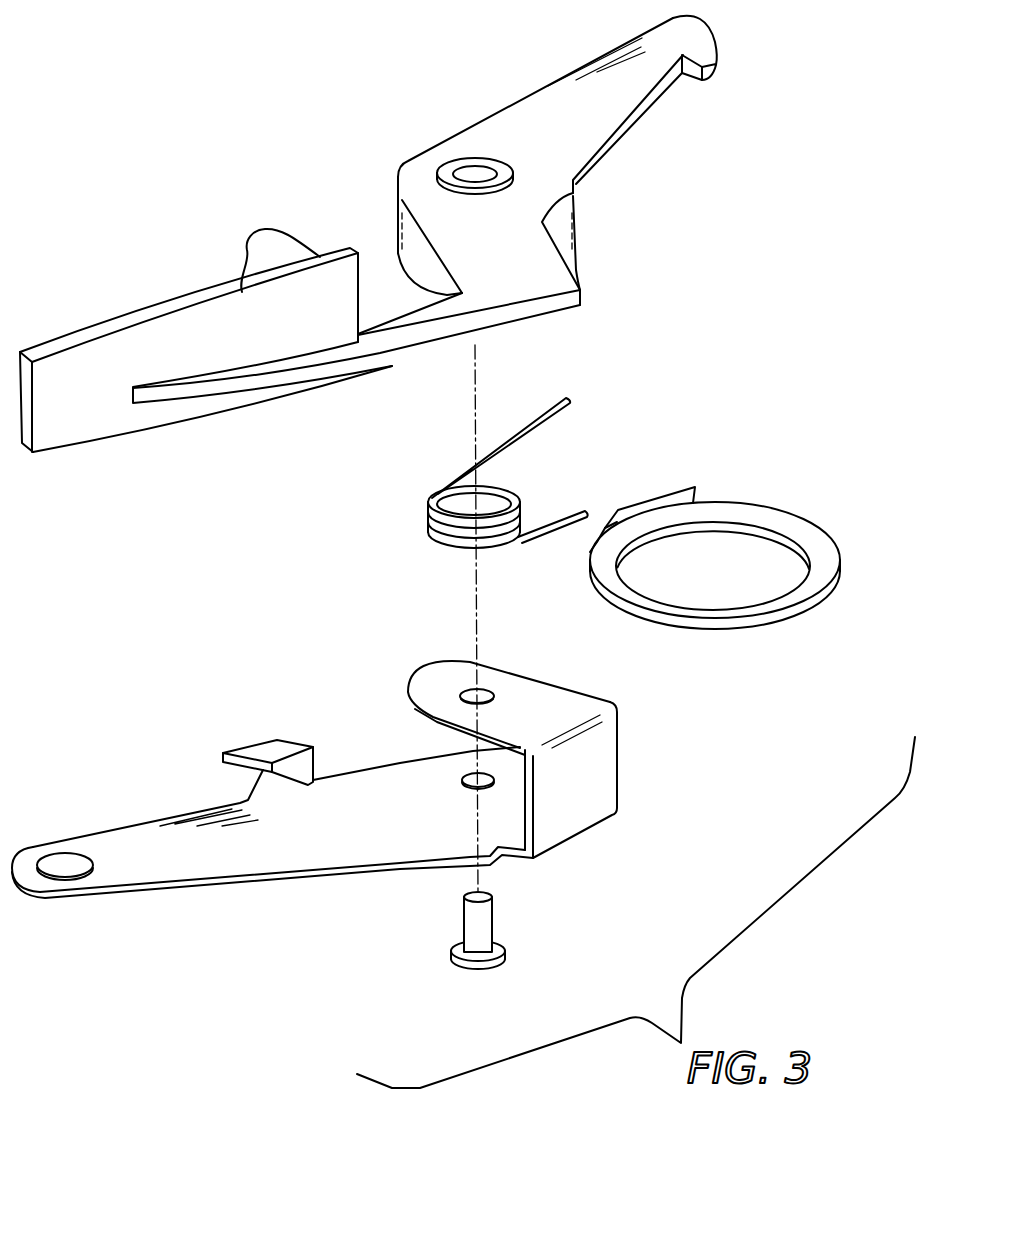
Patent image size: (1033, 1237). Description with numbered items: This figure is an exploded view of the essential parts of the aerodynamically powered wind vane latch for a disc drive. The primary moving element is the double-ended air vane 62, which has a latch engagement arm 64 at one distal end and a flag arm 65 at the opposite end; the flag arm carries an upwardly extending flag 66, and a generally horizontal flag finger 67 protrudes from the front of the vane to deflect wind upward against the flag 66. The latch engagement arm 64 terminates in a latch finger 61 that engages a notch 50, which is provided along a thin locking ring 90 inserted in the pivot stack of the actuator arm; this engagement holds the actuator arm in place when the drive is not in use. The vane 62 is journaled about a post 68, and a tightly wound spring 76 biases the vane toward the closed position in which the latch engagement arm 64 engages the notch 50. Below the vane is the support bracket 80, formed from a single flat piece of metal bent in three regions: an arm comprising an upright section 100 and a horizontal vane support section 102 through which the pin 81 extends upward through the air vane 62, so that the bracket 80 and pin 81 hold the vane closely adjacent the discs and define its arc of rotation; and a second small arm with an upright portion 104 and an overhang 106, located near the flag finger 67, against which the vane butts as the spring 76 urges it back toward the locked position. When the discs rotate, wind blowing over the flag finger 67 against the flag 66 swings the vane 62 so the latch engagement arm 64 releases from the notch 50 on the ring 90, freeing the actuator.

The notch 50 is at (697, 495).
The latch finger 61 is at (705, 50).
The air vane 62 is at (456, 216).
The latch engagement arm 64 is at (598, 115).
The flag arm 65 is at (420, 337).
The flag 66 is at (206, 313).
The flag finger 67 is at (263, 247).
The post 68 is at (445, 167).
The spring 76 is at (428, 523).
The support bracket 80 is at (368, 762).
The pin 81 is at (492, 932).
The locking ring 90 is at (715, 528).
The upright section 100 is at (600, 740).
The horizontal vane support section 102 is at (538, 692).
The upright portion 104 is at (272, 791).
The overhang 106 is at (262, 750).